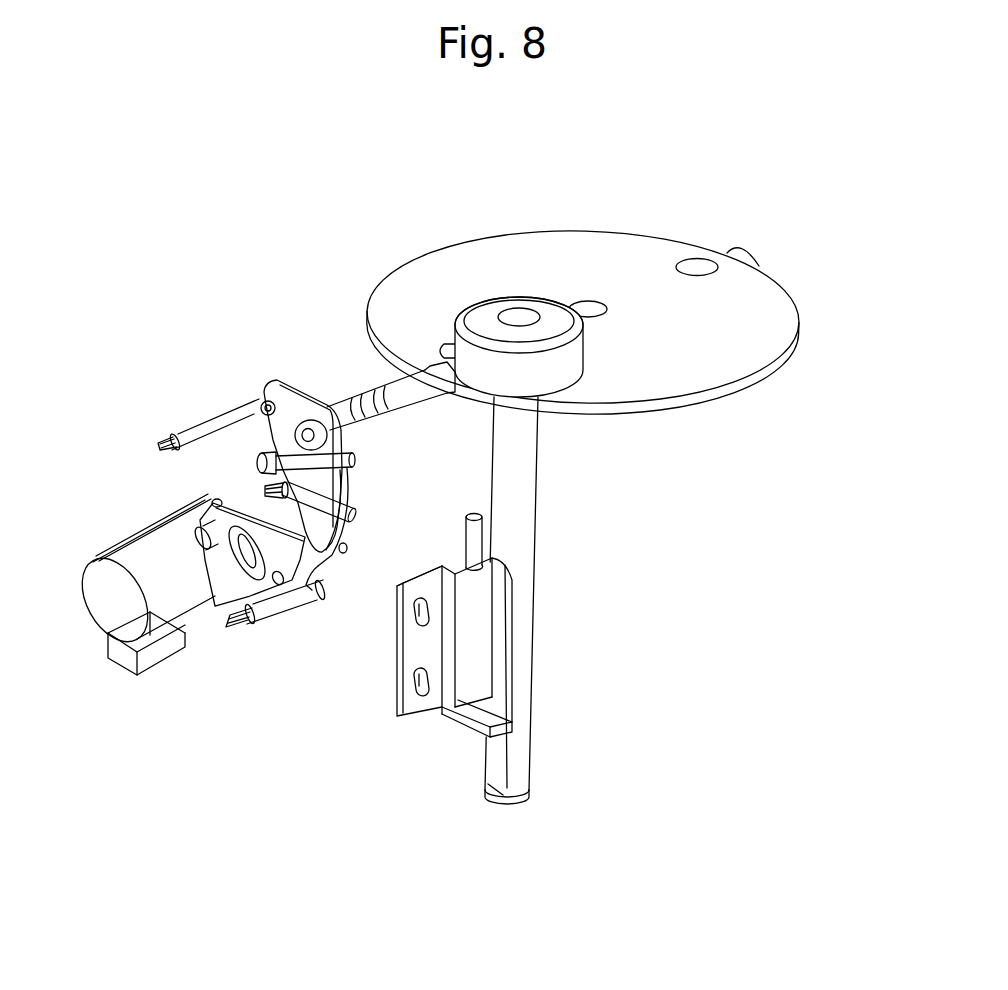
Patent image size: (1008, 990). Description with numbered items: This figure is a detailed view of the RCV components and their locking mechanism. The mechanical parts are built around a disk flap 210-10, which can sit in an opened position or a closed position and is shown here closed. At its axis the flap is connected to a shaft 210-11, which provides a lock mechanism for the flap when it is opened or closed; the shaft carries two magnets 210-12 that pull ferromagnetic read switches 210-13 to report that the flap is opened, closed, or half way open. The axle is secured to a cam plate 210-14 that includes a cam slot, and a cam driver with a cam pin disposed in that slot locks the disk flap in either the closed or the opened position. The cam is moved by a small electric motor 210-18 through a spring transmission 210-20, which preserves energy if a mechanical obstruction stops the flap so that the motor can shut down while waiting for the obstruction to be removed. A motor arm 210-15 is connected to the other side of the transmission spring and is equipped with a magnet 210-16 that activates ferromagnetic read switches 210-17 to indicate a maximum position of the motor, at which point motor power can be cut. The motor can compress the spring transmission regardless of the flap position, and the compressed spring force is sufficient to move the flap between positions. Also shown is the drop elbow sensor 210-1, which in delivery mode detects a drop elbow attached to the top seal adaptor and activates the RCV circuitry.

The disk flap 210-10 is at (625, 288).
The drop elbow sensor 210-1 is at (549, 598).
The shaft 210-11 is at (371, 348).
The magnets 210-12 is at (312, 541).
The ferromagnetic read switches 210-13 is at (303, 601).
The cam plate 210-14 is at (408, 321).
The motor arm 210-15 is at (165, 408).
The magnet 210-16 is at (207, 471).
The ferromagnetic read switches 210-17 is at (186, 667).
The electric motor 210-18 is at (175, 620).
The spring transmission 210-20 is at (412, 708).